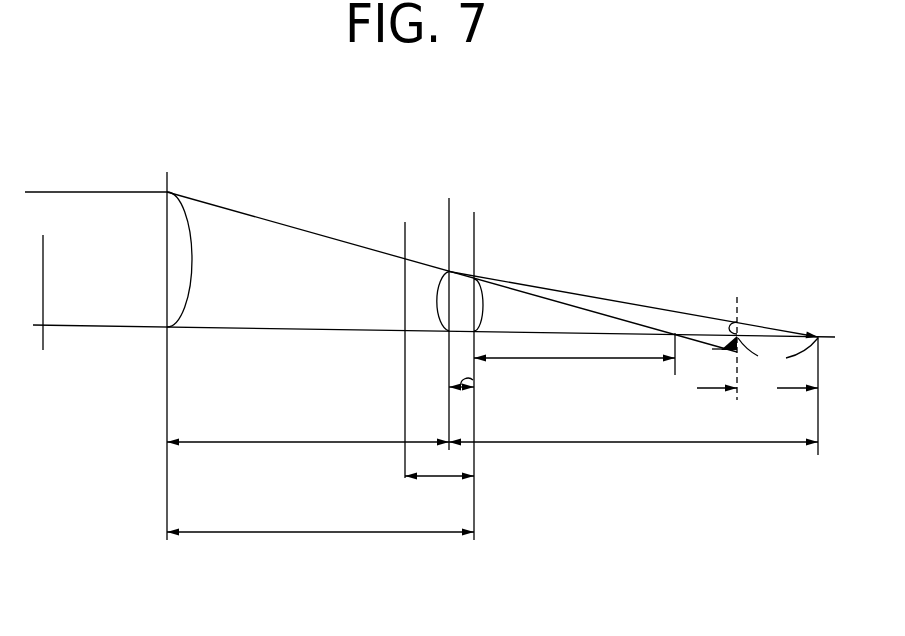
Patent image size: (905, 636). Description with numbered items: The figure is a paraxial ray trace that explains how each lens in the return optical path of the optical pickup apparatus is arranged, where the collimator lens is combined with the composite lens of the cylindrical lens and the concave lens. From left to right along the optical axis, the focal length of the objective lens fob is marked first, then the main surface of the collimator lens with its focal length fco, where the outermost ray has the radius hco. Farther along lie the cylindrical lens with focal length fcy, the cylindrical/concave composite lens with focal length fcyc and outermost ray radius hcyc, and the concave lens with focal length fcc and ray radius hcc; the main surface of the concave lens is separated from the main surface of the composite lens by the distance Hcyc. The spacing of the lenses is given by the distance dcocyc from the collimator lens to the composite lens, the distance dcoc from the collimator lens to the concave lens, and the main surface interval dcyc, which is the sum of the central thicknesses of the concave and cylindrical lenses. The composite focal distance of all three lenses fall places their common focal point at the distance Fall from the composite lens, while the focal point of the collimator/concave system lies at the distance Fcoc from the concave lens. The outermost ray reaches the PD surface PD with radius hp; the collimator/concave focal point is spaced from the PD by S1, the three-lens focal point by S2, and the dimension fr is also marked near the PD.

The focal length of the objective lens fob is at (60, 304).
The focal length of the collimator lens fco is at (185, 356).
The radius of a most outer light at the main surface position of the collimator lens hco is at (188, 259).
The focal length of the cylindrical lens fcy is at (382, 350).
The focal length of the composite lens of the cylindrical lens and the concave lens fcyc is at (450, 308).
The radius of a most outer light at the main surface position of the composite lens hcyc is at (427, 302).
The focal length of the concave lens fcc is at (491, 376).
The radius of a most outer light at the main surface position of the concave lens hcc is at (491, 305).
The distance between the main surface of the concave lens and the main surface of th Hcyc is at (503, 387).
The distance between the main surface of the concave lens and the focal point of the Fcoc is at (574, 372).
The distance between the focal point of the collimator/concave composite lens and th S1 is at (706, 354).
The PD surface PD is at (740, 335).
The radius of a most outer light at the PD surface hp is at (733, 330).
The distance between the focal point of the three composite lens and the surface of S2 is at (778, 354).
The relay lens focal length f'r fr is at (713, 402).
The composite focal distance of the collimator lens, the cylindrical lens and the co fall is at (790, 396).
The distance between the main surface of the cylindrical/concave composite lens and Fall is at (633, 432).
The distance between the main surface of the collimator lens and the main surface of dcocyc is at (308, 429).
The sum value of the central thickness of the concave lens and the central thickness dcyc is at (439, 490).
The distance between the main surface of the collimator lens and the main surface of dcoc is at (320, 520).